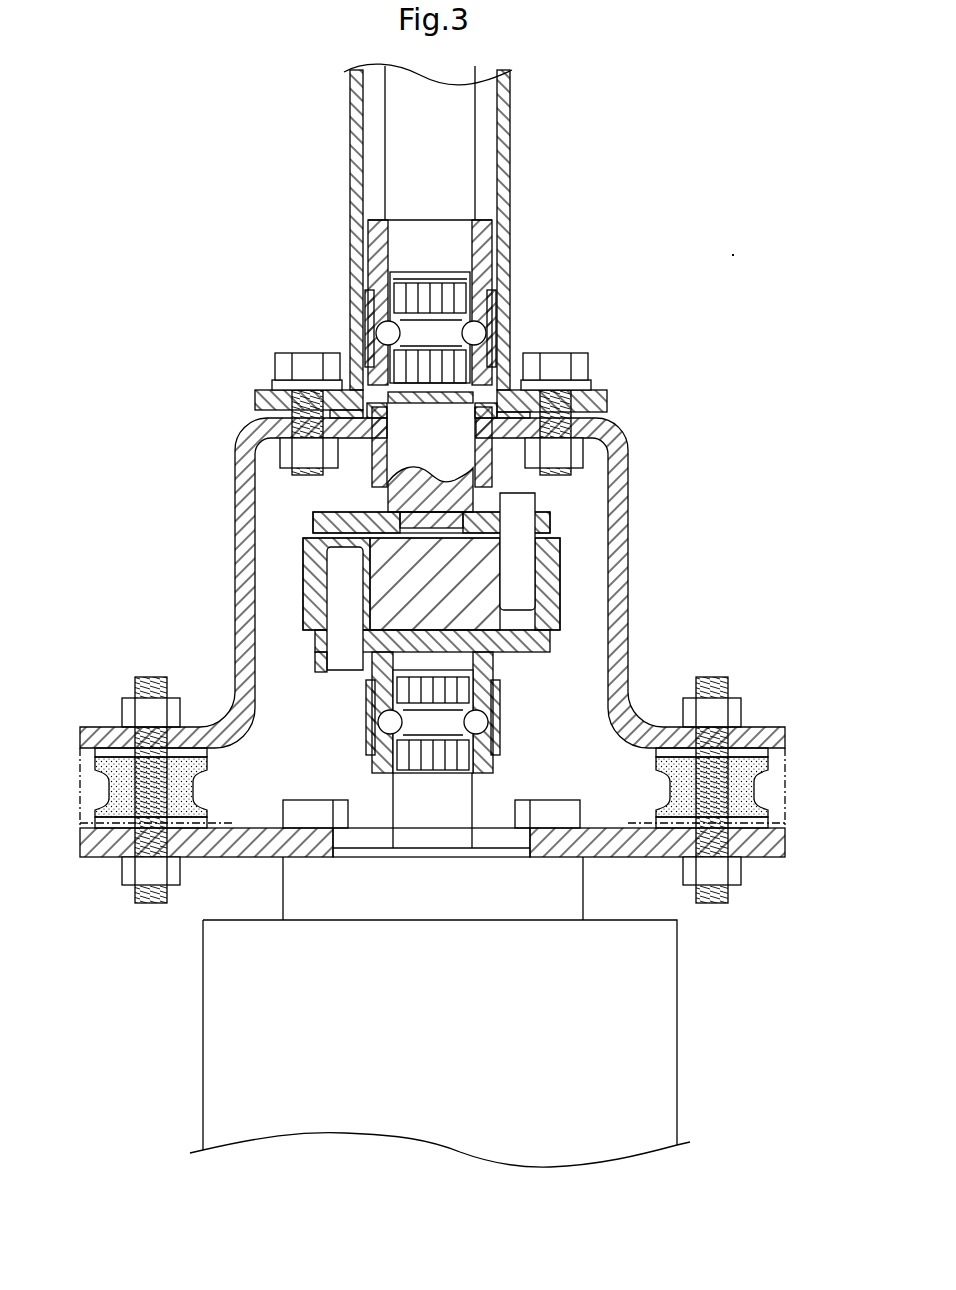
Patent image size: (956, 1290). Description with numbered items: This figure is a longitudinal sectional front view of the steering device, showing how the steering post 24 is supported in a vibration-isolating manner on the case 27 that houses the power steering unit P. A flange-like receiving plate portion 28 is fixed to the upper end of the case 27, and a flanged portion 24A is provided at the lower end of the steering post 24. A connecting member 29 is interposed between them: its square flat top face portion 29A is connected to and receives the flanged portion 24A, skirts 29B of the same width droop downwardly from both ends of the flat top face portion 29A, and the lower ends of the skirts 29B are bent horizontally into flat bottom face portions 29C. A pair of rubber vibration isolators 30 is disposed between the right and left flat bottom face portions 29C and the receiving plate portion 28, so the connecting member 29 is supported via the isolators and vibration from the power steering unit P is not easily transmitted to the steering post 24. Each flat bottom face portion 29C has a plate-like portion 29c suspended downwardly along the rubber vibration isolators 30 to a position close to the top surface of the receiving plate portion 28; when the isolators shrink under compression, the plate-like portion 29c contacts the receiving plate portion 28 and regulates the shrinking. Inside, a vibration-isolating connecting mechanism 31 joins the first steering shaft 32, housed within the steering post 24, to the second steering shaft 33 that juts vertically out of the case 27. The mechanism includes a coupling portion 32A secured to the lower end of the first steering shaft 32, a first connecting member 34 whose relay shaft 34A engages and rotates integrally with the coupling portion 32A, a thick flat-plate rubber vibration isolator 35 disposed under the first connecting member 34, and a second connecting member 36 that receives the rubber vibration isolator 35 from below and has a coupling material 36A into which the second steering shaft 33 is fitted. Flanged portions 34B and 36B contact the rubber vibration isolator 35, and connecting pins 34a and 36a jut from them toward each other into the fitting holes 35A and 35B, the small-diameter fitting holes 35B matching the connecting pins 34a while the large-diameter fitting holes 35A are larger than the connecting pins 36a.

The steering post 24 is at (350, 134).
The flanged portion 24A is at (268, 392).
The case 27 is at (670, 1053).
The receiving plate portion 28 is at (246, 838).
The connecting member 29 is at (441, 568).
The flat top face portion 29A is at (620, 424).
The skirts 29B is at (237, 550).
The flat bottom face portions 29C is at (100, 727).
The plate-like portion 29c is at (80, 830).
The rubber vibration isolators 30 is at (118, 786).
The vibration-isolating connecting mechanism 31 is at (585, 555).
The first steering shaft 32 is at (470, 128).
The coupling portion 32A is at (380, 249).
The second steering shaft 33 is at (405, 810).
The first connecting member 34 is at (402, 380).
The relay shaft 34A is at (440, 295).
The flanged portion 34B is at (330, 514).
The connecting pins 34a is at (522, 492).
The rubber vibration isolator 35 is at (562, 590).
The fitting holes 35A is at (333, 597).
The fitting holes 35B is at (522, 653).
The second connecting member 36 is at (557, 716).
The coupling material 36A is at (470, 772).
The flanged portion 36B is at (522, 646).
The connecting pins 36a is at (345, 672).
The power steering unit P is at (203, 1063).